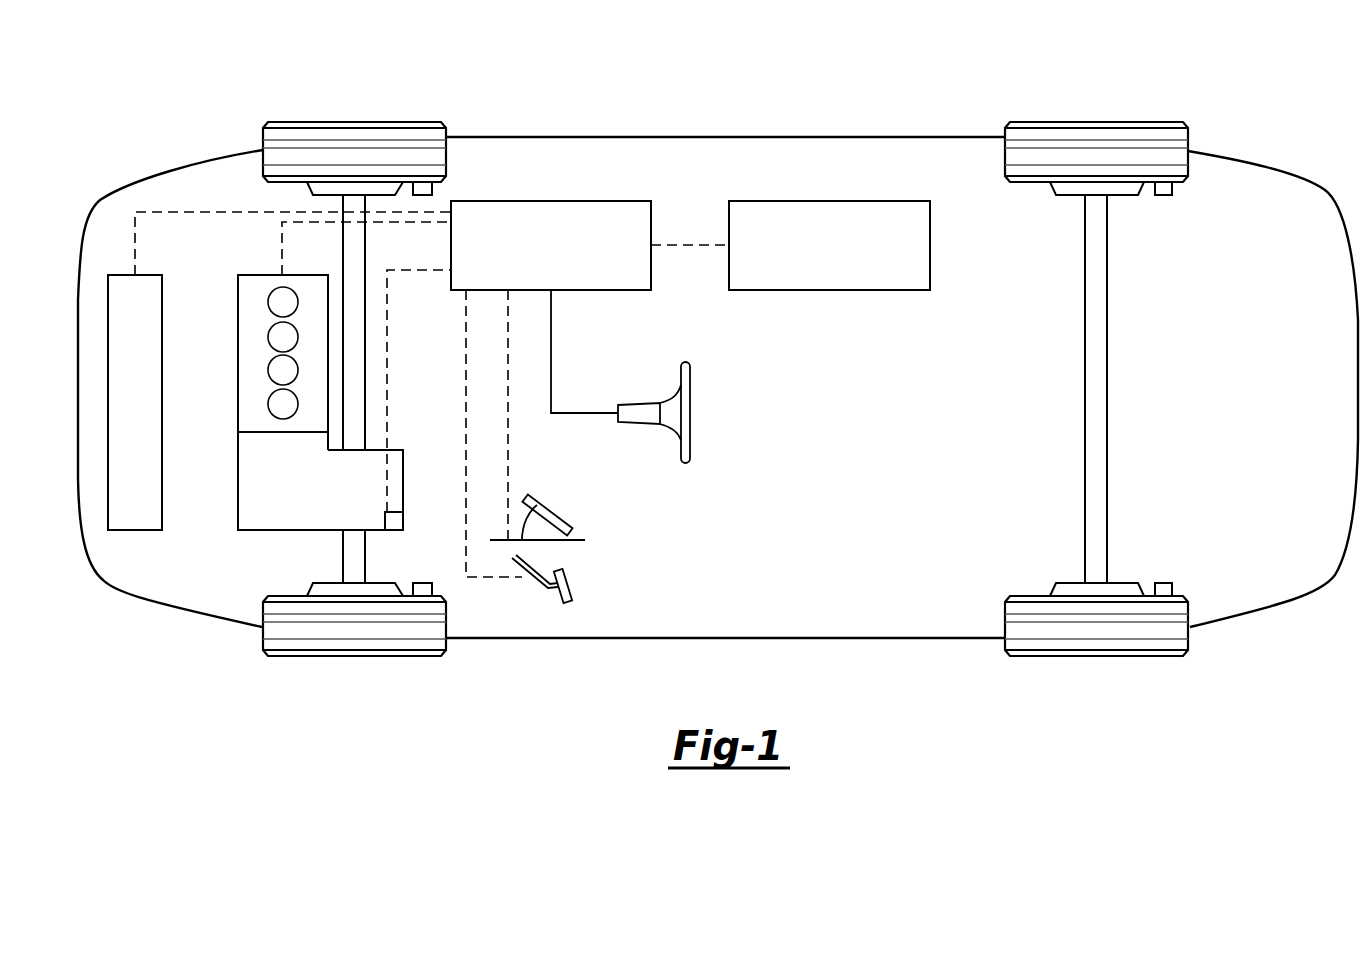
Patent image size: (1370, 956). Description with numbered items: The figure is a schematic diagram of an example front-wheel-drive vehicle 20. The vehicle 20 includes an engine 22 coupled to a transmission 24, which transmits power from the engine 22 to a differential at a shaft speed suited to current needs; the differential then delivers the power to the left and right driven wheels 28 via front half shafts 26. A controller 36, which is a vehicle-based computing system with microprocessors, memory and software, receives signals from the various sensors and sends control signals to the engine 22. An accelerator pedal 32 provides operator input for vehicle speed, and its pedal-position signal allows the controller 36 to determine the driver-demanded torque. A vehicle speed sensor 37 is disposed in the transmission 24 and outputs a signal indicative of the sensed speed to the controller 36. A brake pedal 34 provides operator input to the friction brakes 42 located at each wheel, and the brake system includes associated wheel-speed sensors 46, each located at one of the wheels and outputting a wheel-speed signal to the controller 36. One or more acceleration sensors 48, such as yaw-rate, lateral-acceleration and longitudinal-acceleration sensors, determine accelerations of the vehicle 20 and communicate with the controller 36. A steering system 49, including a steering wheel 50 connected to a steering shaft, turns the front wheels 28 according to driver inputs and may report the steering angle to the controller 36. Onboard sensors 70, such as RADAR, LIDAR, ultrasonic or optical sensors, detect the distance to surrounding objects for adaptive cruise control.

The vehicle 20 is at (722, 68).
The engine 22 is at (238, 335).
The transmission 24 is at (238, 482).
The front half shafts 26 is at (343, 563).
The driven wheels 28 is at (349, 122).
The accelerator pedal 32 is at (548, 505).
The brake pedal 34 is at (575, 580).
The controller 36 is at (578, 201).
The vehicle speed sensor 37 is at (393, 530).
The friction brakes 42 is at (1072, 190).
The wheel-speed sensors 46 is at (1165, 190).
The acceleration sensors 48 is at (860, 201).
The steering system 49 is at (692, 478).
The steering wheel 50 is at (693, 413).
The onboard sensors 70 is at (135, 530).